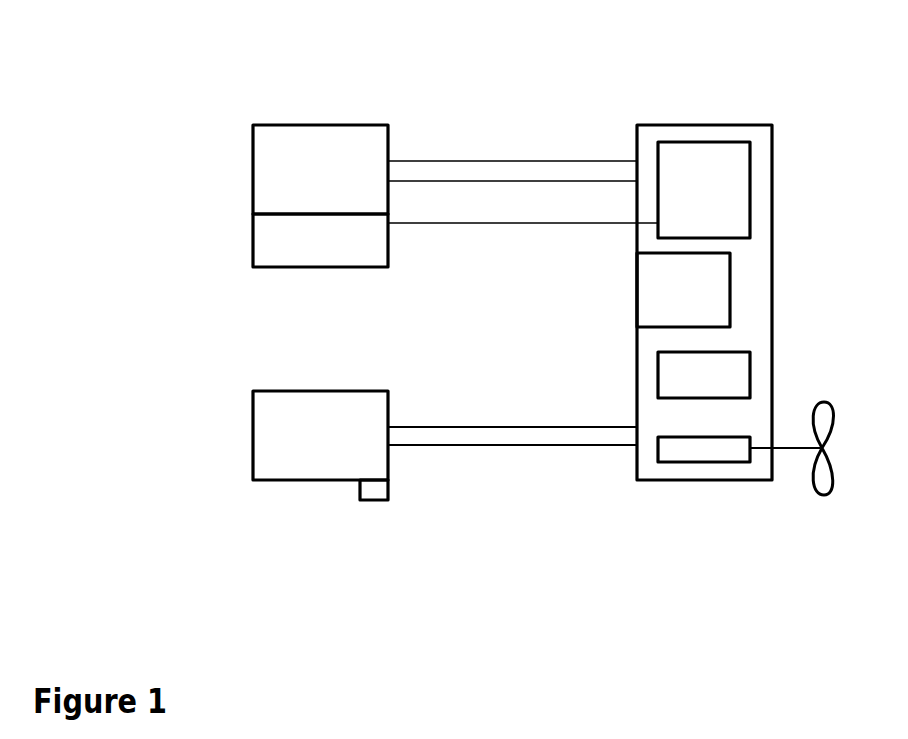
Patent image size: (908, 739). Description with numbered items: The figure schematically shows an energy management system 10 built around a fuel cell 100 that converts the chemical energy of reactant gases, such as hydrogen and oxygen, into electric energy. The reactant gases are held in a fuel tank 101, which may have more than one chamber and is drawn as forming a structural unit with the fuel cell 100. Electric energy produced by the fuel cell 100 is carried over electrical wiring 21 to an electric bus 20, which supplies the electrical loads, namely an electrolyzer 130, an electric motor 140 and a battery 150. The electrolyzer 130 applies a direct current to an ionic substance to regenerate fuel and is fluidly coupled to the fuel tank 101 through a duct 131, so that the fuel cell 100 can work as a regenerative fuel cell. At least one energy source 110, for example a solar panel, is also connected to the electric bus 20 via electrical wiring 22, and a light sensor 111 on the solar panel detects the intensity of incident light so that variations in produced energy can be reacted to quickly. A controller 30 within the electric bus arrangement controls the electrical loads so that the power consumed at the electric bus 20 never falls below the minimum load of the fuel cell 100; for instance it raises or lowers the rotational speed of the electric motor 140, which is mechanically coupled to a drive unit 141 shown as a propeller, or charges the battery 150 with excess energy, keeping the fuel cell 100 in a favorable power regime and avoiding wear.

The energy management system 10 is at (333, 50).
The electric bus 20 is at (775, 142).
The electrical wiring 21 is at (495, 180).
The electrical wiring 22 is at (487, 445).
The controller 30 is at (713, 292).
The fuel cell 100 is at (272, 152).
The fuel tank 101 is at (272, 240).
The energy source 110 is at (272, 417).
The light sensor 111 is at (378, 488).
The electrolyzer 130 is at (730, 205).
The duct 131 is at (492, 223).
The electric motor 140 is at (695, 453).
The drive unit 141 is at (823, 480).
The battery 150 is at (730, 370).